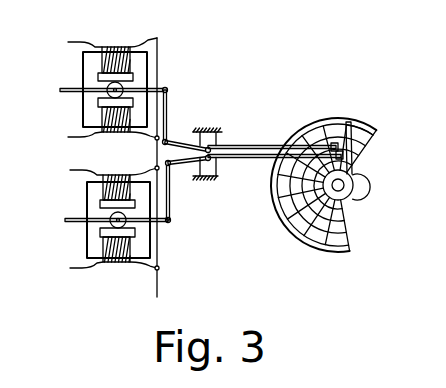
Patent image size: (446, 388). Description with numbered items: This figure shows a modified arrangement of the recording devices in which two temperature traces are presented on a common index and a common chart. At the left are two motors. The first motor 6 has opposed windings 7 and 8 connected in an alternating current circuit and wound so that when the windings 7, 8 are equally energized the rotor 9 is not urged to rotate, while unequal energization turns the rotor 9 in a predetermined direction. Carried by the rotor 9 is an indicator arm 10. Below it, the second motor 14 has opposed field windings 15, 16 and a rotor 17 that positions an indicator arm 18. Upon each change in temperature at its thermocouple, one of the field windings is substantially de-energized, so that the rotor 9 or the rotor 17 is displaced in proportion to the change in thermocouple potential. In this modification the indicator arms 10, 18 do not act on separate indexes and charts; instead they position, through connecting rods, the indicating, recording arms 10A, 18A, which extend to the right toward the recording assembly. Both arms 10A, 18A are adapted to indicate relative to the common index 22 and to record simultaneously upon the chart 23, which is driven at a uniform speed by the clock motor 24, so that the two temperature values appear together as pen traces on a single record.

The motor 6 is at (88, 231).
The winding 7 is at (113, 162).
The winding 8 is at (121, 262).
The rotor 9 is at (112, 215).
The indicator arm 10 is at (169, 222).
The indicating, recording arm 10A is at (272, 157).
The motor 14 is at (83, 60).
The field winding 15 is at (108, 47).
The field winding 16 is at (118, 133).
The rotor 17 is at (103, 83).
The indicator arm 18 is at (164, 86).
The indicating, recording arm 18A is at (274, 146).
The common index 22 is at (350, 127).
The chart 23 is at (366, 140).
The clock motor 24 is at (367, 180).